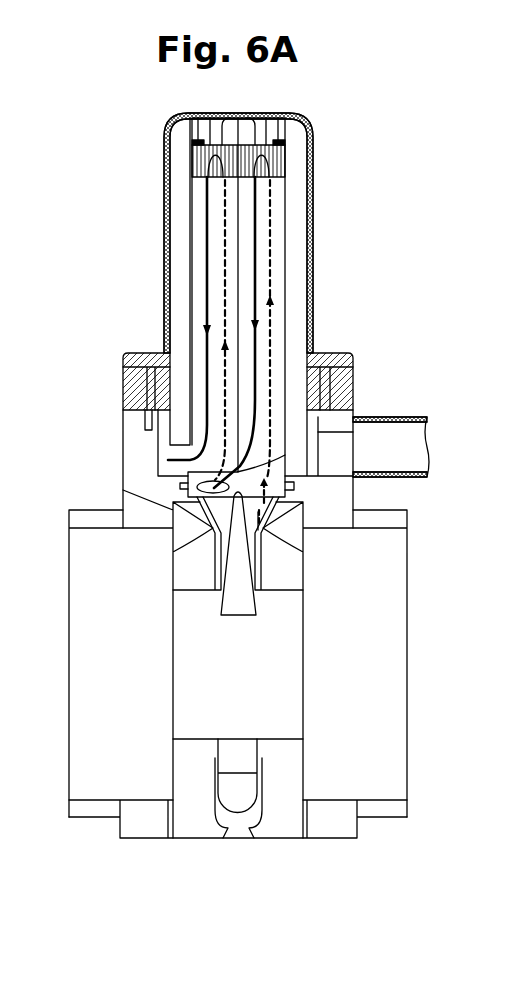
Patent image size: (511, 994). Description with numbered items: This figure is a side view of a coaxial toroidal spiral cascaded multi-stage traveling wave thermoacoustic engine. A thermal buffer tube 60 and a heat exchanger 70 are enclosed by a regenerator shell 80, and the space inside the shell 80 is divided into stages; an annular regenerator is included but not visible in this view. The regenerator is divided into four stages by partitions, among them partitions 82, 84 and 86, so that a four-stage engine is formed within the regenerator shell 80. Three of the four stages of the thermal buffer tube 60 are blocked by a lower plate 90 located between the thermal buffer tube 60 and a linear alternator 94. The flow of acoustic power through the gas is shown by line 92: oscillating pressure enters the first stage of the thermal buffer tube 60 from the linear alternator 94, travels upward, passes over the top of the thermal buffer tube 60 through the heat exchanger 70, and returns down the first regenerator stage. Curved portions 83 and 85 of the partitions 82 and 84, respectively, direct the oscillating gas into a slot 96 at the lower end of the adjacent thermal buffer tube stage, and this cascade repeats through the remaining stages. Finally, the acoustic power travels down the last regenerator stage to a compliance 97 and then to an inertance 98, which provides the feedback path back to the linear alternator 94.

The thermal buffer tube 60 is at (200, 216).
The heat exchanger 70 is at (278, 126).
The regenerator shell 80 is at (200, 126).
The partition 82 is at (310, 222).
The curved portion 83 is at (285, 456).
The partition 84 is at (237, 289).
The curved portion 85 is at (183, 493).
The partition 86 is at (182, 307).
The lower plate 90 is at (213, 528).
The line 92 is at (262, 545).
The linear alternator 94 is at (290, 702).
The slot 96 is at (187, 492).
The compliance 97 is at (165, 452).
The inertance 98 is at (413, 417).